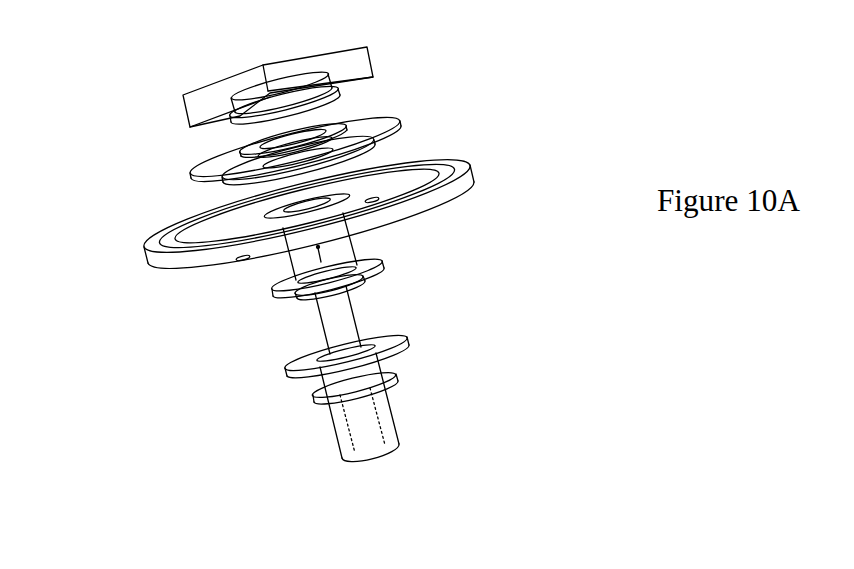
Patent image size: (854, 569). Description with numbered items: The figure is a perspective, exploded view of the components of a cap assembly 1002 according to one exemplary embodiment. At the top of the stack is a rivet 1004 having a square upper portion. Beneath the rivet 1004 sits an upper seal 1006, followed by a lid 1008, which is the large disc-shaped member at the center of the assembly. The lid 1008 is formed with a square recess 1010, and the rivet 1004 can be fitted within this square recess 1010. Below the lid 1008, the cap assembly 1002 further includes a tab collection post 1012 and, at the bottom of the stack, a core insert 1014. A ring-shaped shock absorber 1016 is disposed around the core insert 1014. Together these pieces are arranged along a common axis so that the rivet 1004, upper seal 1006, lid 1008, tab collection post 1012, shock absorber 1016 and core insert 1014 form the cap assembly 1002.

The cap assembly 1002 is at (152, 401).
The rivet 1004 is at (392, 63).
The upper seal 1006 is at (415, 118).
The lid 1008 is at (470, 183).
The square recess 1010 is at (376, 217).
The tab collection post 1012 is at (374, 294).
The core insert 1014 is at (414, 447).
The shock absorber 1016 is at (397, 382).